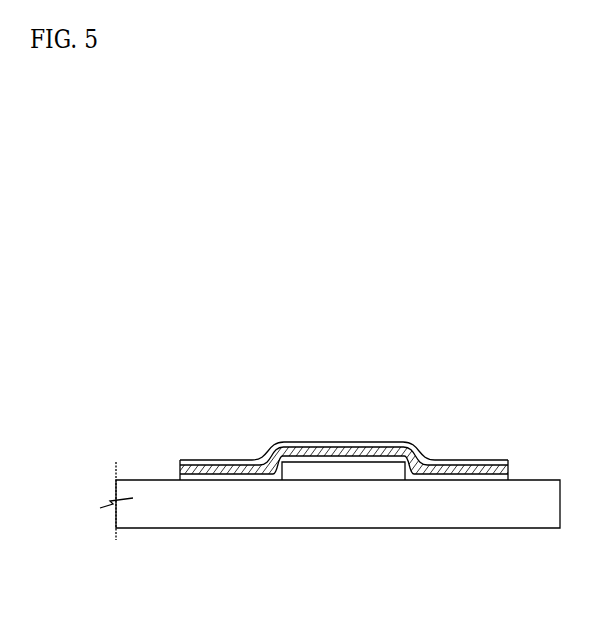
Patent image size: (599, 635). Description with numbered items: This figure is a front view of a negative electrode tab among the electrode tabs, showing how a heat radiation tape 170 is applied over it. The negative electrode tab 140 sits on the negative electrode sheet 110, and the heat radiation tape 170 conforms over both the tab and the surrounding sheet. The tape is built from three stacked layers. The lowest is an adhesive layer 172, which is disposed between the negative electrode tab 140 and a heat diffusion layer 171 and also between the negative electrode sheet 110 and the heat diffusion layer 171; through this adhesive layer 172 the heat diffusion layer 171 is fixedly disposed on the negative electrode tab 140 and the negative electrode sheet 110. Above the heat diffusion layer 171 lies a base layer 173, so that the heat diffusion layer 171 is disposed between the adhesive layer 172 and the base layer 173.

The negative electrode sheet 110 is at (527, 523).
The negative electrode tab 140 is at (333, 465).
The heat radiation tape 170 is at (356, 398).
The heat diffusion layer 171 is at (468, 468).
The adhesive layer 172 is at (498, 477).
The base layer 173 is at (344, 407).